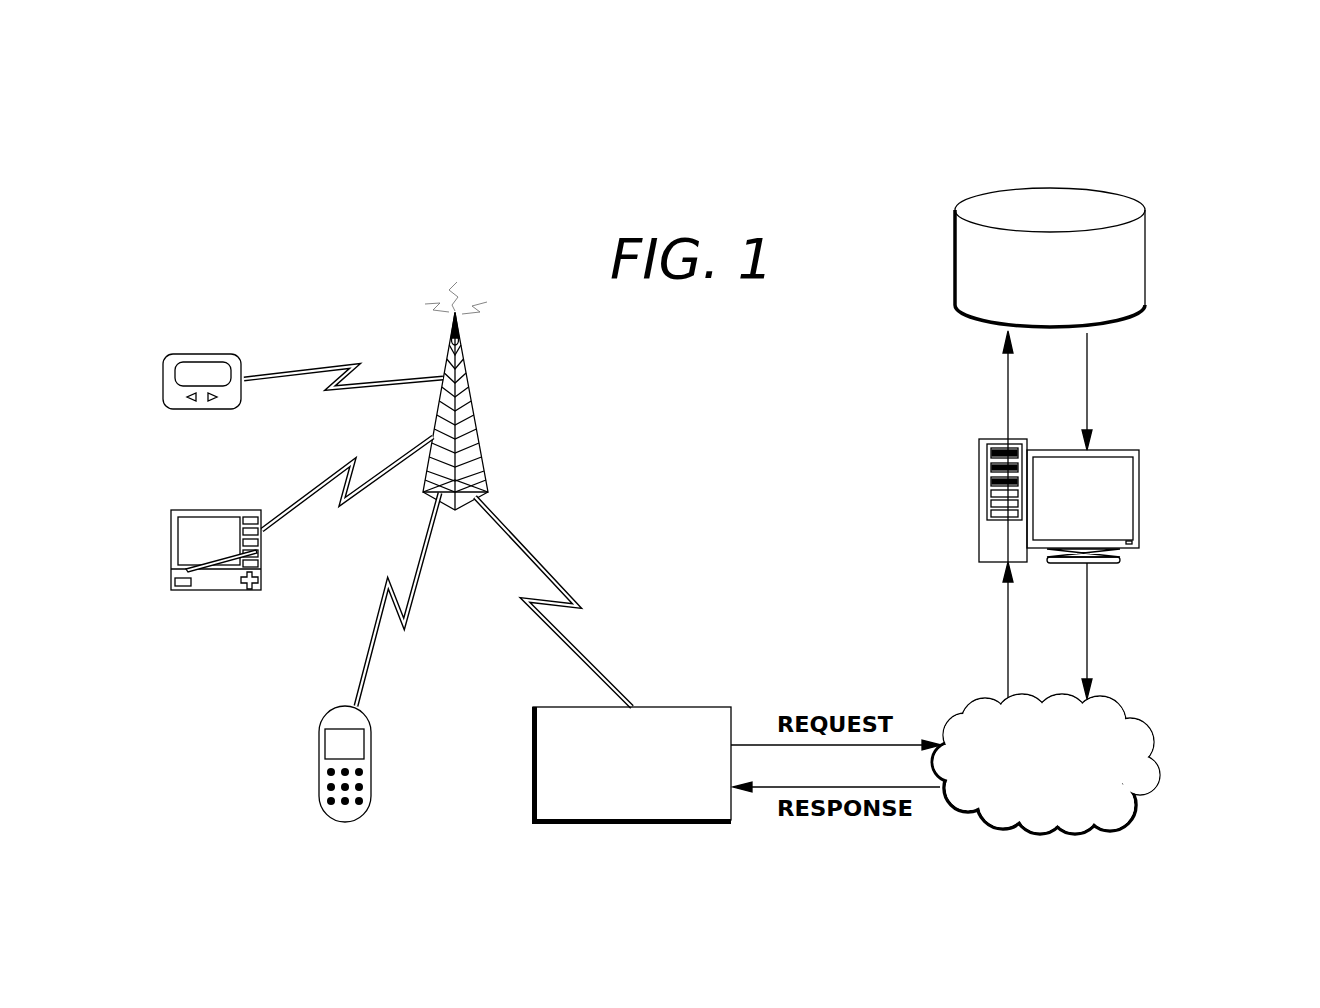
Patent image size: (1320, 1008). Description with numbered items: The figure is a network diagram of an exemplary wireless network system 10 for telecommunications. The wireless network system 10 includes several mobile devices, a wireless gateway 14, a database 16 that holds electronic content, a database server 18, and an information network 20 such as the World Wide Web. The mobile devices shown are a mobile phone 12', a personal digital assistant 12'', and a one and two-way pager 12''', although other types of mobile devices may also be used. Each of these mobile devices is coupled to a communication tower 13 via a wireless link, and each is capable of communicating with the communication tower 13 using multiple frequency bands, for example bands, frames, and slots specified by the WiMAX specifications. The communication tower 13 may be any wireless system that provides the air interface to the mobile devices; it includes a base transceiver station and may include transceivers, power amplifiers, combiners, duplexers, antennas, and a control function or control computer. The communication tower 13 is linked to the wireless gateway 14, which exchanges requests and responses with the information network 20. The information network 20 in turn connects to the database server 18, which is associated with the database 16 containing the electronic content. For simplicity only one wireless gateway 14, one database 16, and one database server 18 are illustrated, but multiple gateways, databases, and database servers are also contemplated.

The wireless network system 10 is at (1248, 135).
The mobile phone 12' is at (327, 764).
The personal digital assistant (PDA) 12'' is at (197, 550).
The one and two-way pager 12''' is at (180, 396).
The communication tower 13 is at (478, 427).
The wireless gateway 14 is at (532, 765).
The database 16 is at (1147, 253).
The database server 18 is at (980, 490).
The information network 20 is at (1155, 768).